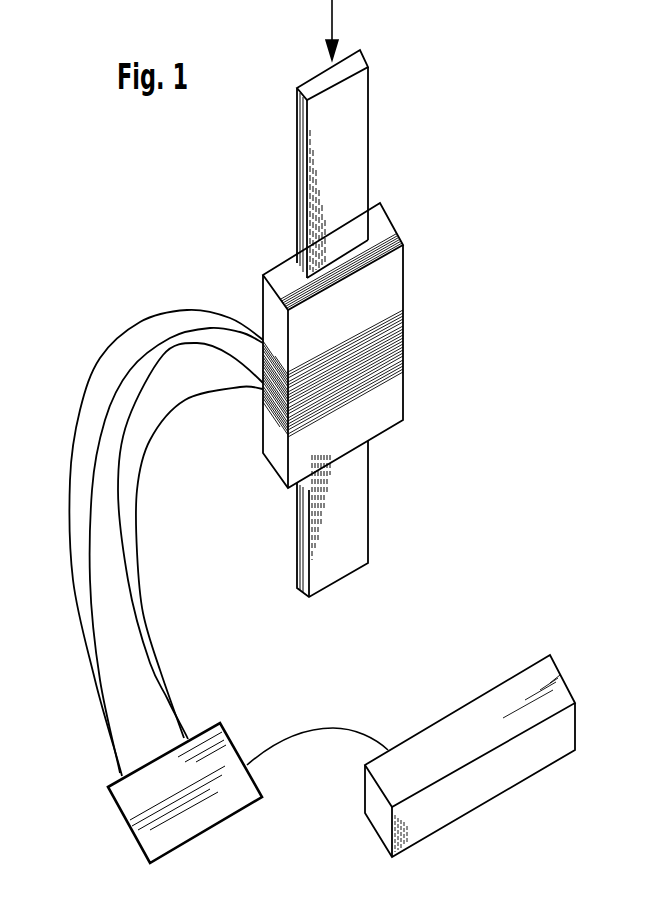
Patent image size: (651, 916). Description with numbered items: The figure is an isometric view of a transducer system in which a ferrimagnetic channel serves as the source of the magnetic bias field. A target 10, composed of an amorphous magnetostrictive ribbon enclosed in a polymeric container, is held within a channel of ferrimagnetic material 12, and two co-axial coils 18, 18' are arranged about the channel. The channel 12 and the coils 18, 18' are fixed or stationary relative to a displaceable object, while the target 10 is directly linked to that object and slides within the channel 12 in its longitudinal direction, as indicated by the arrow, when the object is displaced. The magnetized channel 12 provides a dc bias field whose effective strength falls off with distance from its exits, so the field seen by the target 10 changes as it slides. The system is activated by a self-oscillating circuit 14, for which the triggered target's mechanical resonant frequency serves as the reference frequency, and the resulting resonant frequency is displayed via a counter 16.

The target 10 is at (368, 177).
The channel of ferrimagnetic material 12 is at (397, 291).
The self-oscillating circuit 14 is at (233, 758).
The counter 16 is at (568, 694).
The coil 18 is at (150, 543).
The coil 18' is at (190, 541).